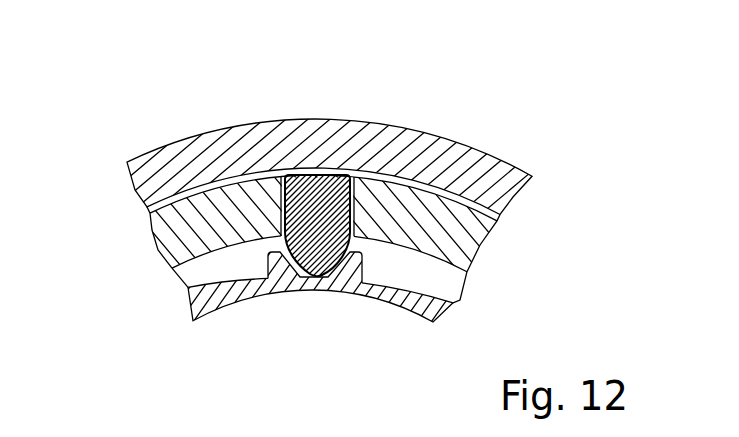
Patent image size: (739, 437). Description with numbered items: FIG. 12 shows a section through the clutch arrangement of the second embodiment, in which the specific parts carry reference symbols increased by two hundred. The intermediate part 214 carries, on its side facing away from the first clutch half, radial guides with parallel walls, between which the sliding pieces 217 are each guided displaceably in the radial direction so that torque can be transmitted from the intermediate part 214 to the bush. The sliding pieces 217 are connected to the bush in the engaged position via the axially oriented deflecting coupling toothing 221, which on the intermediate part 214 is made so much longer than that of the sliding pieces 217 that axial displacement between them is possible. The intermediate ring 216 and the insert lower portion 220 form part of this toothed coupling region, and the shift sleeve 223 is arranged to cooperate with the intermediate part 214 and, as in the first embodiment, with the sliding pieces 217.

The intermediate part 214 is at (218, 305).
The intermediate ring 216 is at (353, 202).
The sliding pieces 217 is at (322, 196).
The insert lower portion 220 is at (318, 252).
The deflecting coupling toothing 221 is at (345, 287).
The shift sleeve 223 is at (437, 160).